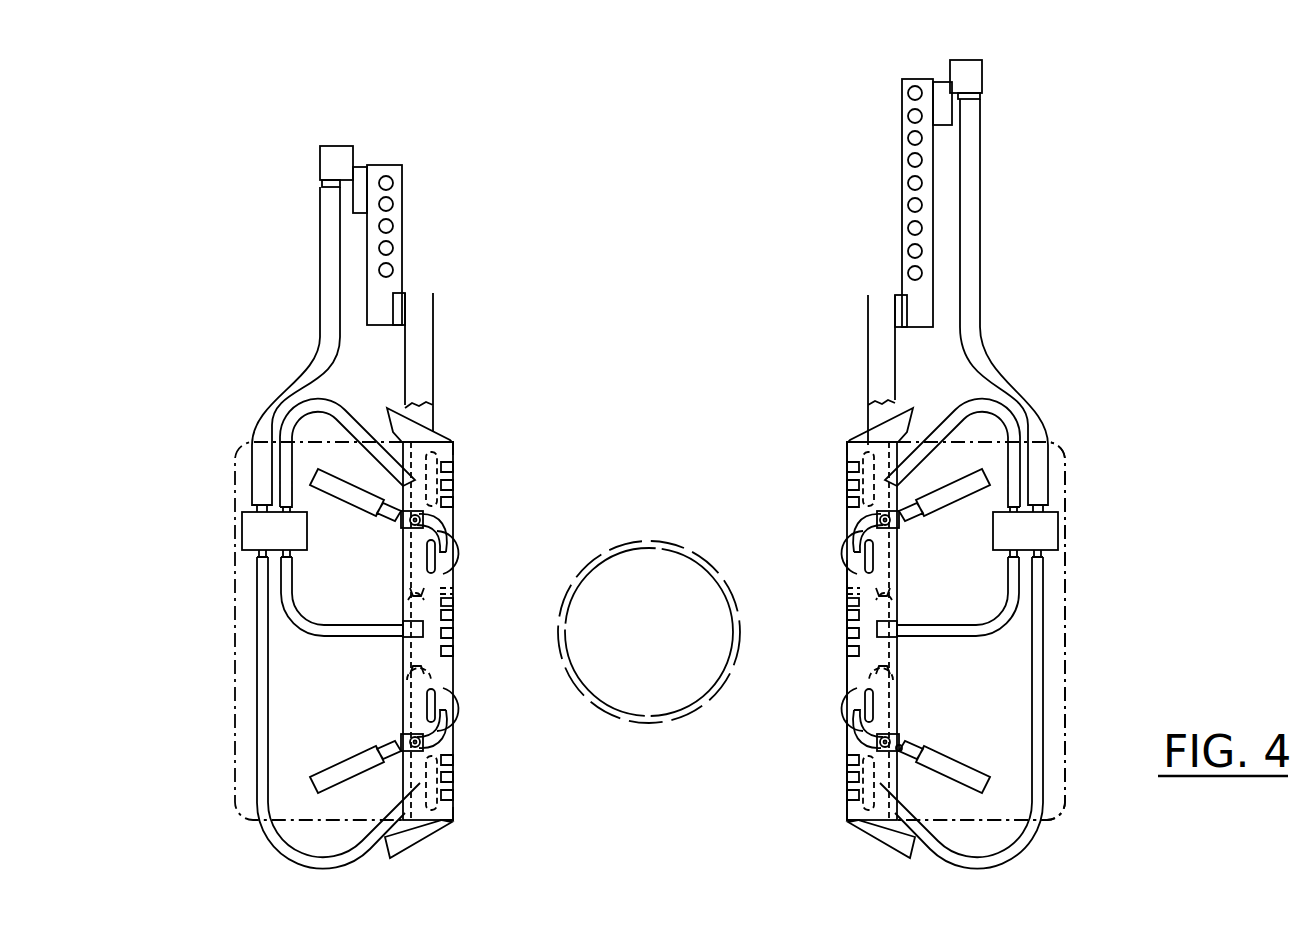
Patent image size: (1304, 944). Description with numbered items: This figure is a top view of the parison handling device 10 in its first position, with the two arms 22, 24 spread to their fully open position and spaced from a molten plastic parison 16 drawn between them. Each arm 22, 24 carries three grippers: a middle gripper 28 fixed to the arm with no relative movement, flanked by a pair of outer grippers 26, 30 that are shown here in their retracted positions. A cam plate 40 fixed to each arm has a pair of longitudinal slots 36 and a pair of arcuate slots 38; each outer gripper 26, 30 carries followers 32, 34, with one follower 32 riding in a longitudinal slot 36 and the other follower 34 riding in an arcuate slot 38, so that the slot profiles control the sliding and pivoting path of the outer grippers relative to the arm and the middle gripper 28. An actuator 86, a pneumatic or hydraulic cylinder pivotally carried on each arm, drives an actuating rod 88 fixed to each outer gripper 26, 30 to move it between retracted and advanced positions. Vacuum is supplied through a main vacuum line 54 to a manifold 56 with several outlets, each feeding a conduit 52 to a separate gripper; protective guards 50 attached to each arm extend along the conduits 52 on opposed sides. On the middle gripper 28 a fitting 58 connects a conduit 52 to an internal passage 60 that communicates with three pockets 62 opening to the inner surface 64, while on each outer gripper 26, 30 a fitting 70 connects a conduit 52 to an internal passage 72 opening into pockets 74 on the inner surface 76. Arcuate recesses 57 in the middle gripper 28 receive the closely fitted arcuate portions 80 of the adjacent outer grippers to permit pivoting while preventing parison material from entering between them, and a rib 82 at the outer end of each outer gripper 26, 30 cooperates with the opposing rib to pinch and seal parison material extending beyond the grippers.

The parison handling device 10 is at (1136, 147).
The parison 16 is at (690, 541).
The arm 22 is at (870, 305).
The arm 24 is at (427, 320).
The outer gripper 26 is at (868, 466).
The middle gripper 28 is at (853, 597).
The outer gripper 30 is at (852, 813).
The follower 32 is at (410, 539).
The follower 34 is at (458, 498).
The longitudinal slot 36 is at (428, 553).
The arcuate slot 38 is at (448, 538).
The cam plate 40 is at (456, 563).
The protective guard 50 is at (237, 693).
The conduit 52 is at (285, 475).
The main vacuum line 54 is at (263, 407).
The manifold 56 is at (255, 532).
The arcuate recess 57 is at (415, 596).
The fitting 58 is at (412, 638).
The internal passage 60 is at (455, 590).
The pocket 62 is at (460, 614).
The inner surface 64 is at (454, 602).
The fitting 70 is at (414, 468).
The internal passage 72 is at (456, 450).
The pocket 74 is at (453, 482).
The inner surface 76 is at (454, 513).
The arcuate portion 80 is at (408, 589).
The rib 82 is at (391, 406).
The actuator 86 is at (346, 490).
The actuating rod 88 is at (902, 748).